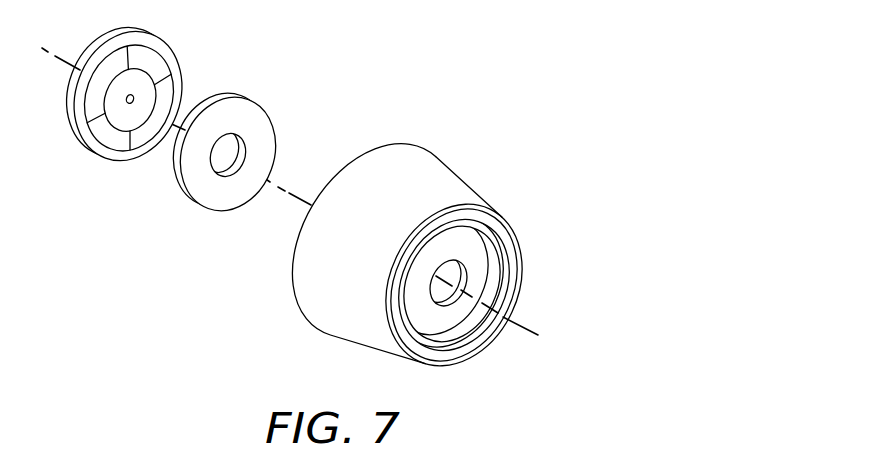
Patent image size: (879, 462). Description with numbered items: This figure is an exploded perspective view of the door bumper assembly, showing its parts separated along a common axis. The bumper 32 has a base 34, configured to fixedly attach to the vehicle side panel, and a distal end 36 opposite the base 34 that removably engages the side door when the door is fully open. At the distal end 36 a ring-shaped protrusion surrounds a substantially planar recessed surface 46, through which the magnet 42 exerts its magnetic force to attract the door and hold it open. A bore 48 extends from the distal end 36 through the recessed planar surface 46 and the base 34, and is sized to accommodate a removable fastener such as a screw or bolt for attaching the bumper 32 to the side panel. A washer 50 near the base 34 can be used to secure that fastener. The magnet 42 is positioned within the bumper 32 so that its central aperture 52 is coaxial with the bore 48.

The bumper 32 is at (347, 278).
The base 34 is at (367, 167).
The distal end 36 is at (457, 192).
The magnet 42 is at (247, 130).
The recessed planar surface 46 is at (433, 322).
The bore 48 is at (460, 277).
The washer 50 is at (148, 62).
The central aperture 52 is at (223, 163).